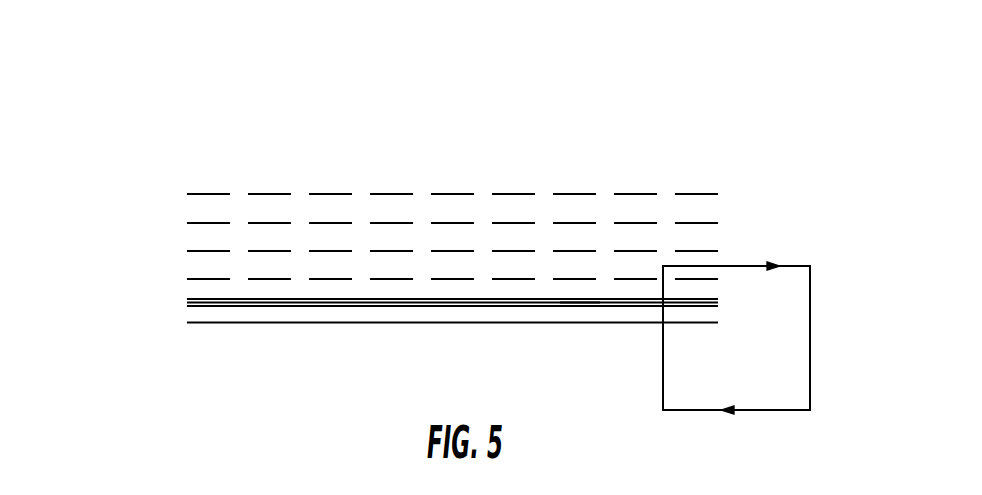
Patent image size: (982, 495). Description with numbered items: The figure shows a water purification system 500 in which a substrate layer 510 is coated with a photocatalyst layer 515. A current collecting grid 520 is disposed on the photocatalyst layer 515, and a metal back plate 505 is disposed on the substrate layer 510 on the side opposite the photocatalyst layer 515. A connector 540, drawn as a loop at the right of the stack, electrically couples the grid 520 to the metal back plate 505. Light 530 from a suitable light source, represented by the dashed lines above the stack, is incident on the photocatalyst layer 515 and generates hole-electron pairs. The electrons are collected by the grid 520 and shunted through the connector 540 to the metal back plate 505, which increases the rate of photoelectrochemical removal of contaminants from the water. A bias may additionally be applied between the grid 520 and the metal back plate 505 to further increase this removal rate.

The water purification system 500 is at (771, 42).
The metal back plate 505 is at (381, 339).
The substrate layer 510 is at (198, 316).
The photocatalyst layer 515 is at (187, 304).
The current collecting grid 520 is at (567, 297).
The light 530 is at (413, 293).
The connector 540 is at (810, 302).